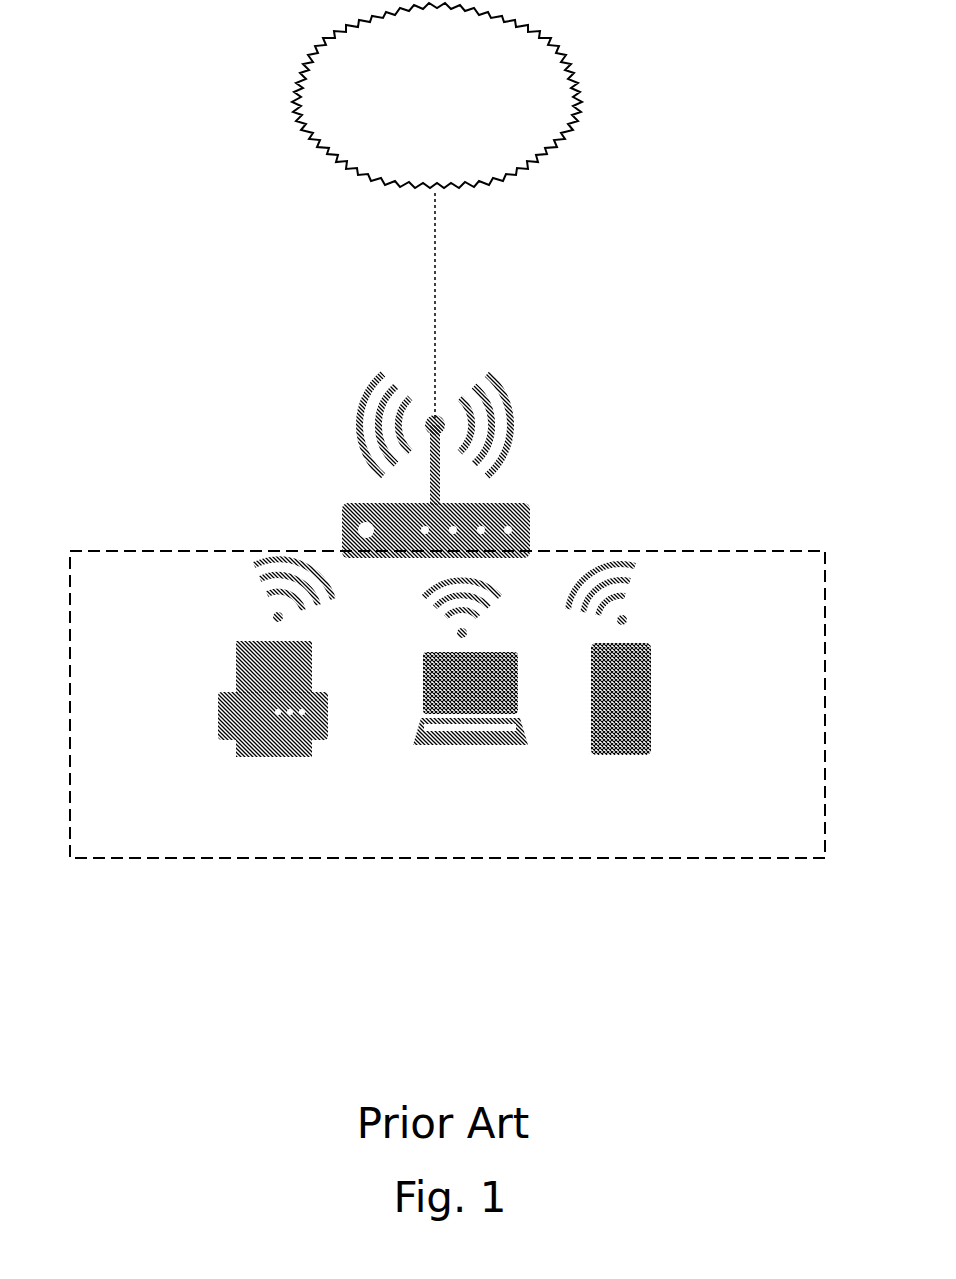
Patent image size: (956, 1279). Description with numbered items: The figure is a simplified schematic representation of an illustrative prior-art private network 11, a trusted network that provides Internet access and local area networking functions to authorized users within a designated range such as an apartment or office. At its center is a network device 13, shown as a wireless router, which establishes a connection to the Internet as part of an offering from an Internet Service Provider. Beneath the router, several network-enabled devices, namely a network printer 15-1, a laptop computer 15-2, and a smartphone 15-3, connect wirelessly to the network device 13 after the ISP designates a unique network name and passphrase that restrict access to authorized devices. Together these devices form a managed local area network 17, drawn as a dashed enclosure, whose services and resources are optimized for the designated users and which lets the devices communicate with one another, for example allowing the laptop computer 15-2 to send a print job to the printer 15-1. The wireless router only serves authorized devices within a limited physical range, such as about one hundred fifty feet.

The private network 11 is at (434, 522).
The network device 13 is at (342, 515).
The network printer 15-1 is at (222, 695).
The laptop computer 15-2 is at (468, 742).
The smartphone 15-3 is at (650, 703).
The managed local area network 17 is at (675, 860).